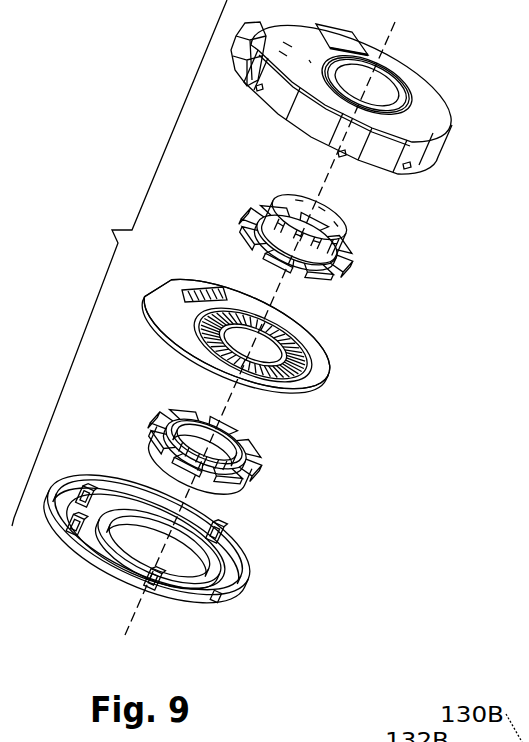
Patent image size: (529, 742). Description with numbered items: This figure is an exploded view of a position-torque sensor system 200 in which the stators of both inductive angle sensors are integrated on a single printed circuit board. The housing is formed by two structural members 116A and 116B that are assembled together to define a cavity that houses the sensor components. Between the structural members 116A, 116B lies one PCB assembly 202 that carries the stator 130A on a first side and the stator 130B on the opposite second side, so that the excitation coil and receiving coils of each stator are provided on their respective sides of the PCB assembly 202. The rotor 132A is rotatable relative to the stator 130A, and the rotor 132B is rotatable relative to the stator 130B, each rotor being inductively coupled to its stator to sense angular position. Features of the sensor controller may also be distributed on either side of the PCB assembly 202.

The position-torque sensor system 200 is at (119, 263).
The structural member 116A is at (432, 120).
The structural member 116B is at (250, 553).
The stator 130A is at (372, 249).
The stator 130B is at (279, 447).
The rotor 132A is at (313, 346).
The rotor 132B is at (192, 358).
The PCB assembly 202 is at (320, 375).